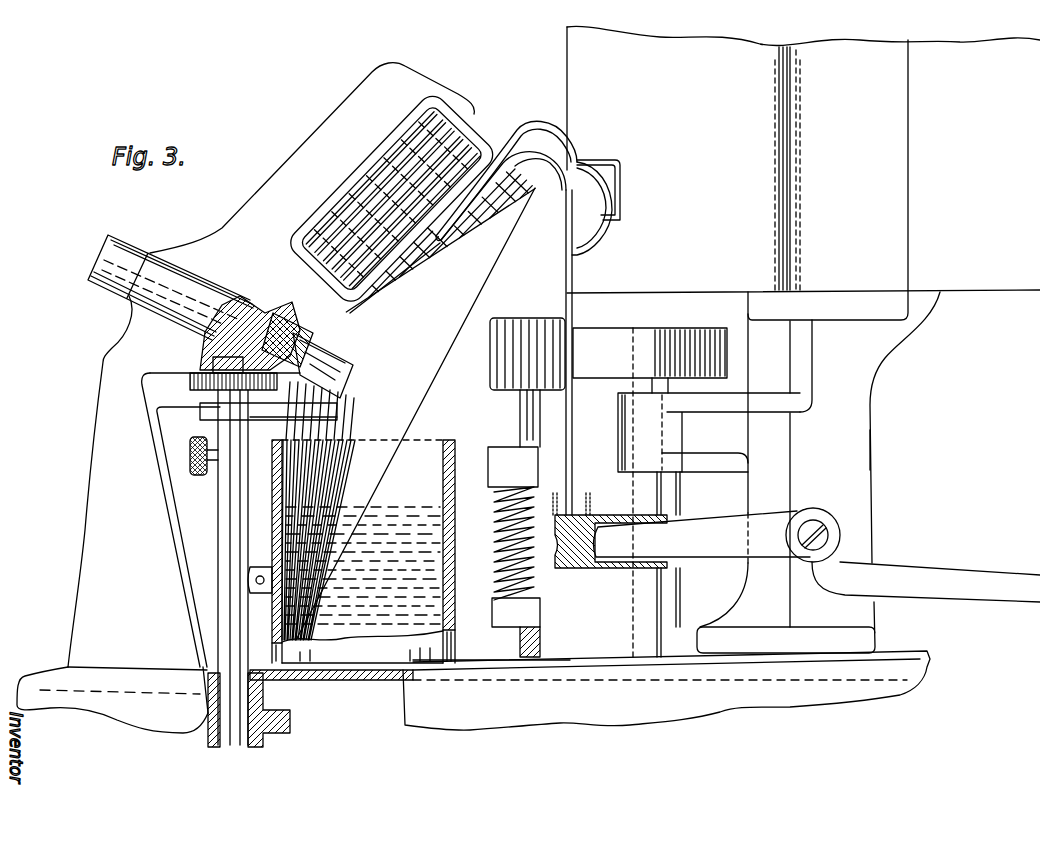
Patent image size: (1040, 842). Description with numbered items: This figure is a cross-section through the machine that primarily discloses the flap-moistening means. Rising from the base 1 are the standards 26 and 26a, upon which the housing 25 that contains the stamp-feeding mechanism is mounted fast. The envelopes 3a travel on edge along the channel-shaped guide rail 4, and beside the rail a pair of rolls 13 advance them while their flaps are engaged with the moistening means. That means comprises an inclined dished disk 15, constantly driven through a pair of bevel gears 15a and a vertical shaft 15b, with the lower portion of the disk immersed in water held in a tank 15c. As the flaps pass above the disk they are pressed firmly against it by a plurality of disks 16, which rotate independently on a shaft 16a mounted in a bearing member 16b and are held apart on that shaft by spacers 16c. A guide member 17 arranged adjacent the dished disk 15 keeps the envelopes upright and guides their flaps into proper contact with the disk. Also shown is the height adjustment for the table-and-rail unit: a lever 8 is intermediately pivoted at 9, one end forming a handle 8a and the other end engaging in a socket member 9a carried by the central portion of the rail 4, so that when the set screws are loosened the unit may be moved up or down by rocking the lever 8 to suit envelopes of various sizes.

The base 1 is at (728, 703).
The envelopes 3a is at (573, 409).
The channel-shaped guide rail 4 is at (586, 497).
The lever 8 is at (713, 530).
The handle 8a is at (973, 580).
The pivot 9 is at (830, 534).
The socket member 9a is at (607, 513).
The rolls 13 is at (592, 342).
The inclined dished disk 15 is at (420, 394).
The bevel gears 15a is at (312, 330).
The vertical shaft 15b is at (228, 505).
The tank 15c is at (425, 448).
The disks 16 is at (483, 140).
The shaft 16a is at (483, 143).
The bearing member 16b is at (413, 85).
The spacers 16c is at (377, 182).
The guide member 17 is at (530, 126).
The housing 25 is at (600, 68).
The standard 26 is at (887, 317).
The standard 26a is at (847, 455).